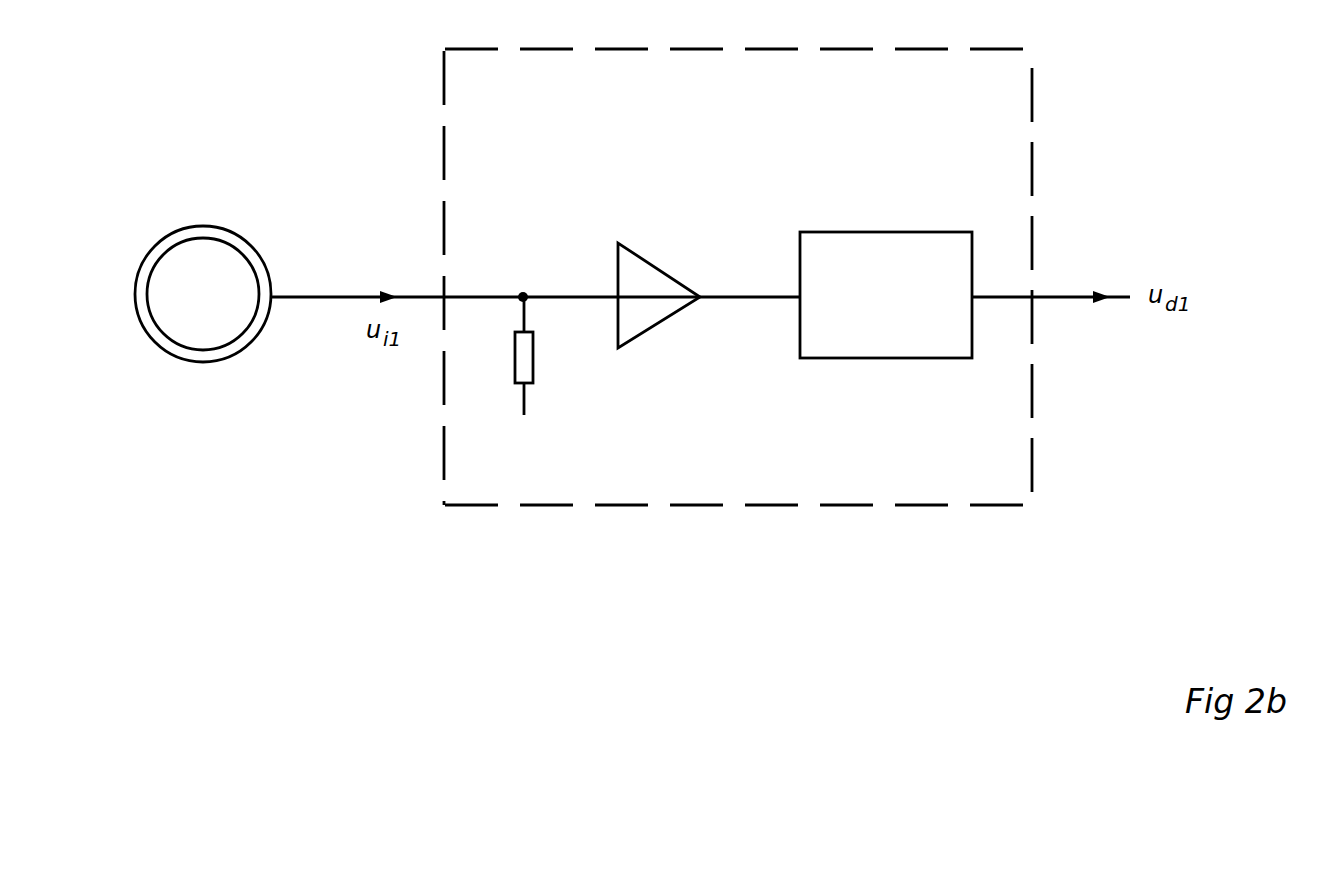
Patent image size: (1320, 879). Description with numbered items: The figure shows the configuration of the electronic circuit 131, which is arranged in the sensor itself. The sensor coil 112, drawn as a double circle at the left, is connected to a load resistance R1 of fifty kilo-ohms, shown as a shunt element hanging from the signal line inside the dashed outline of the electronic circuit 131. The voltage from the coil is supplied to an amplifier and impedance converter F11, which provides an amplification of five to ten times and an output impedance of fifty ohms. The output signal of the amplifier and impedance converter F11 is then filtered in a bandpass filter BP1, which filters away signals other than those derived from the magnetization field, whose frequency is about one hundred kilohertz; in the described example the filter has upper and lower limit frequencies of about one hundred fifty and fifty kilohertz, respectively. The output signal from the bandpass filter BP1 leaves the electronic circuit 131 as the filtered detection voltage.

The sensor coil 112 is at (183, 353).
The electronic circuit 131 is at (964, 487).
The load resistance R1 is at (538, 362).
The amplifier and impedance converter F11 is at (648, 277).
The bandpass filter BP1 is at (868, 346).